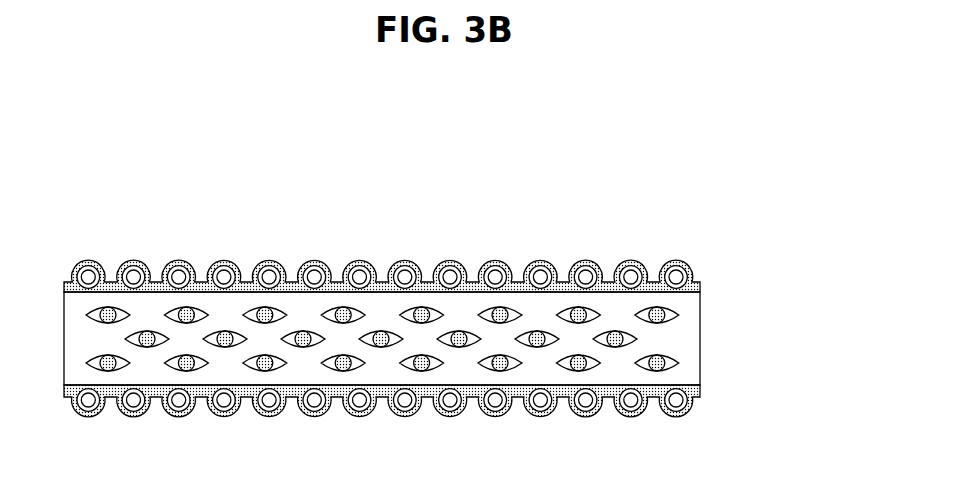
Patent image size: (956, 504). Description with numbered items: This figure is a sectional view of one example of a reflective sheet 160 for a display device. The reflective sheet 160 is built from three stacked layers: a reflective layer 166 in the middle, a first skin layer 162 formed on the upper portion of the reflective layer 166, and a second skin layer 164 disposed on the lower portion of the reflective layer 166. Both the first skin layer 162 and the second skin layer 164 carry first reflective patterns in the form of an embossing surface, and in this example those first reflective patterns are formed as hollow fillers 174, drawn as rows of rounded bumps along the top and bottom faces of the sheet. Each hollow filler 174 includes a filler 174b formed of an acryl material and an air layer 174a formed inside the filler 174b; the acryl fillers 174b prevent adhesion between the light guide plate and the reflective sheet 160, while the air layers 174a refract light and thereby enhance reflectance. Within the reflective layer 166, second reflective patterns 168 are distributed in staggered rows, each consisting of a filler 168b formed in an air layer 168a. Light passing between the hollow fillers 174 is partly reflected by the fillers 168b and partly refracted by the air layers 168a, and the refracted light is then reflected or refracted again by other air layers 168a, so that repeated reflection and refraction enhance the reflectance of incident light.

The reflective sheet 160 is at (92, 136).
The first skin layer 162 is at (422, 211).
The second skin layer 164 is at (699, 390).
The reflective layer 166 is at (696, 306).
The second reflective patterns 168 is at (471, 342).
The air layer 168a is at (677, 314).
The filler 168b is at (668, 320).
The hollow filler 174 is at (677, 208).
The air layer 174a is at (675, 259).
The filler 174b is at (681, 259).